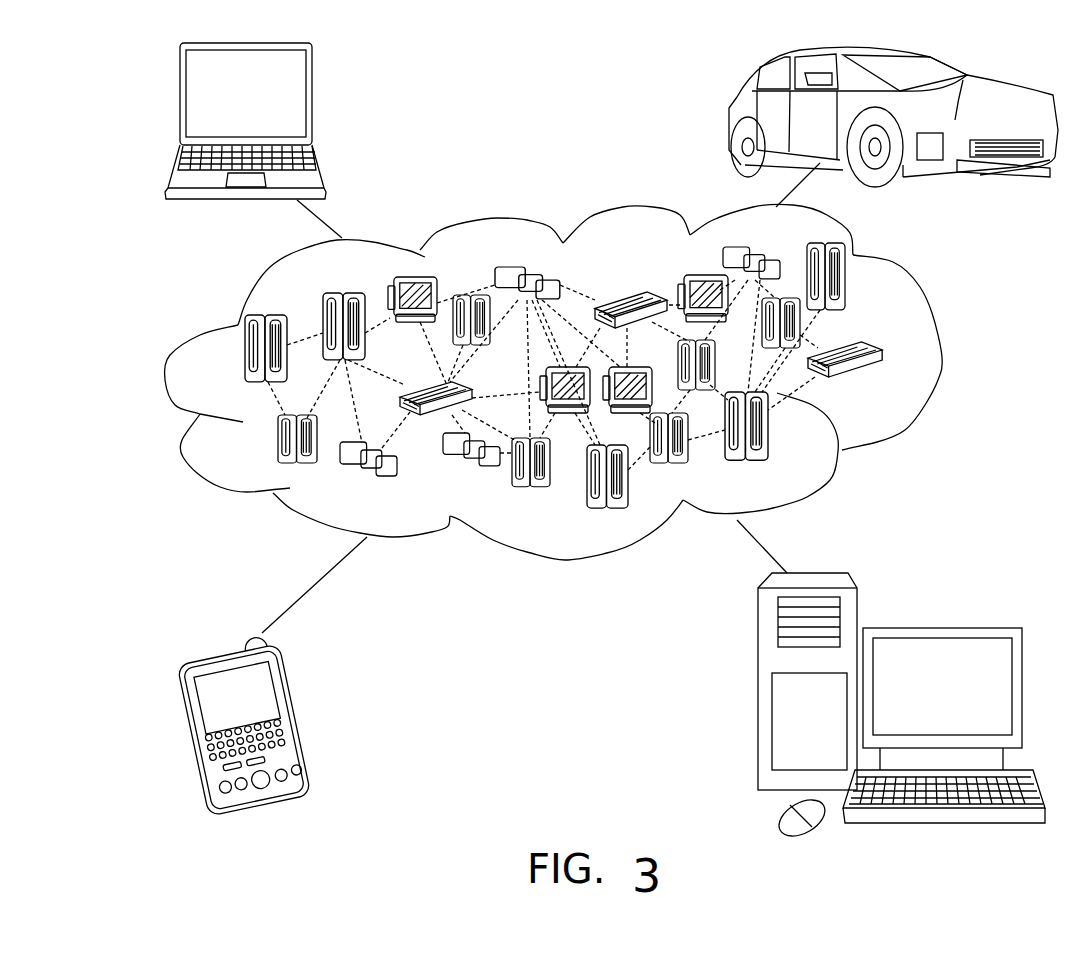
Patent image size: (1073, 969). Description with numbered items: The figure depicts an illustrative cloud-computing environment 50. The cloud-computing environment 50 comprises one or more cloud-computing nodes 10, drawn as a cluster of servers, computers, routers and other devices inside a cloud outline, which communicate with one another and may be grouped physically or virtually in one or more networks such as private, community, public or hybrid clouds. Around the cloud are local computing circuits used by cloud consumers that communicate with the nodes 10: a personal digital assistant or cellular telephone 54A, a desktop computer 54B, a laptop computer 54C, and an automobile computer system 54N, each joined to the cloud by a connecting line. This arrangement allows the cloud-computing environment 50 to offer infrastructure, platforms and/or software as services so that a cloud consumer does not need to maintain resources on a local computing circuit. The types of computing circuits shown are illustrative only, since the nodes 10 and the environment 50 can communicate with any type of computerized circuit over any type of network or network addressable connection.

The cloud-computing node 10 is at (887, 388).
The cloud-computing environment 50 is at (942, 357).
The personal digital assistant (PDA) or cellular telephone 54A is at (303, 713).
The desktop computer 54B is at (938, 626).
The laptop computer 54C is at (312, 100).
The automobile computer system 54N is at (735, 118).